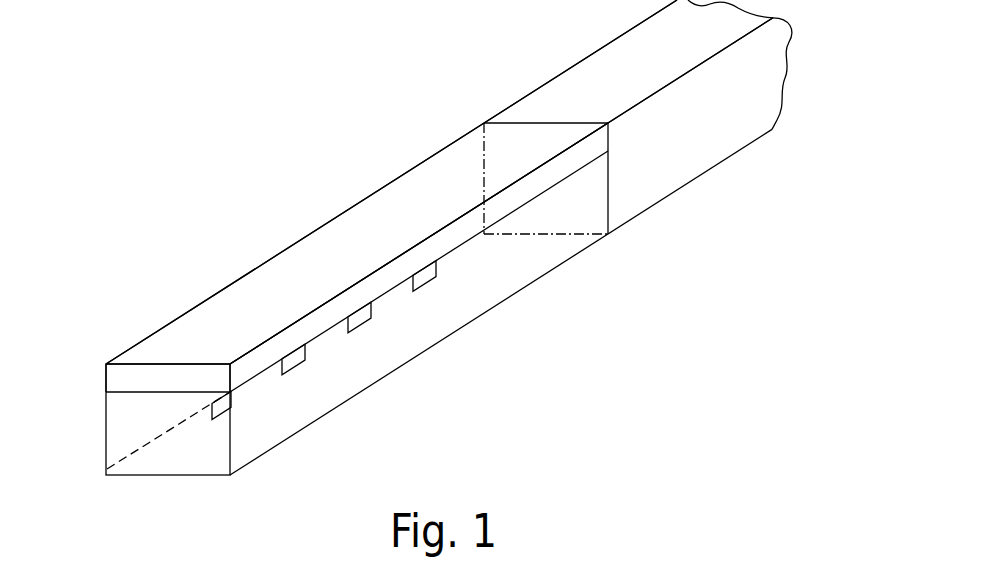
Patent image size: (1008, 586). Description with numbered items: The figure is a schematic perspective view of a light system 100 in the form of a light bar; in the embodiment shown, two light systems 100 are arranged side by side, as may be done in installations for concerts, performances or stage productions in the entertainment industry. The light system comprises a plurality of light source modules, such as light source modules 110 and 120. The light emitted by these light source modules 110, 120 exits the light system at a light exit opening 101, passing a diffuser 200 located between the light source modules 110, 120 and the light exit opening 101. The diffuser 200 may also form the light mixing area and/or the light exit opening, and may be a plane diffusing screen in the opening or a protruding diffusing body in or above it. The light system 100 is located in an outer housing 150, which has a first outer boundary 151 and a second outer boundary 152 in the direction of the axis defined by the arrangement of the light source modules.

The light system 100 is at (702, 173).
The light exit opening 101 is at (244, 318).
The light source module 110 is at (292, 362).
The light source module 120 is at (217, 423).
The outer housing 150 is at (361, 197).
The first outer boundary 151 is at (541, 128).
The second outer boundary 152 is at (168, 363).
The diffuser 200 is at (143, 395).